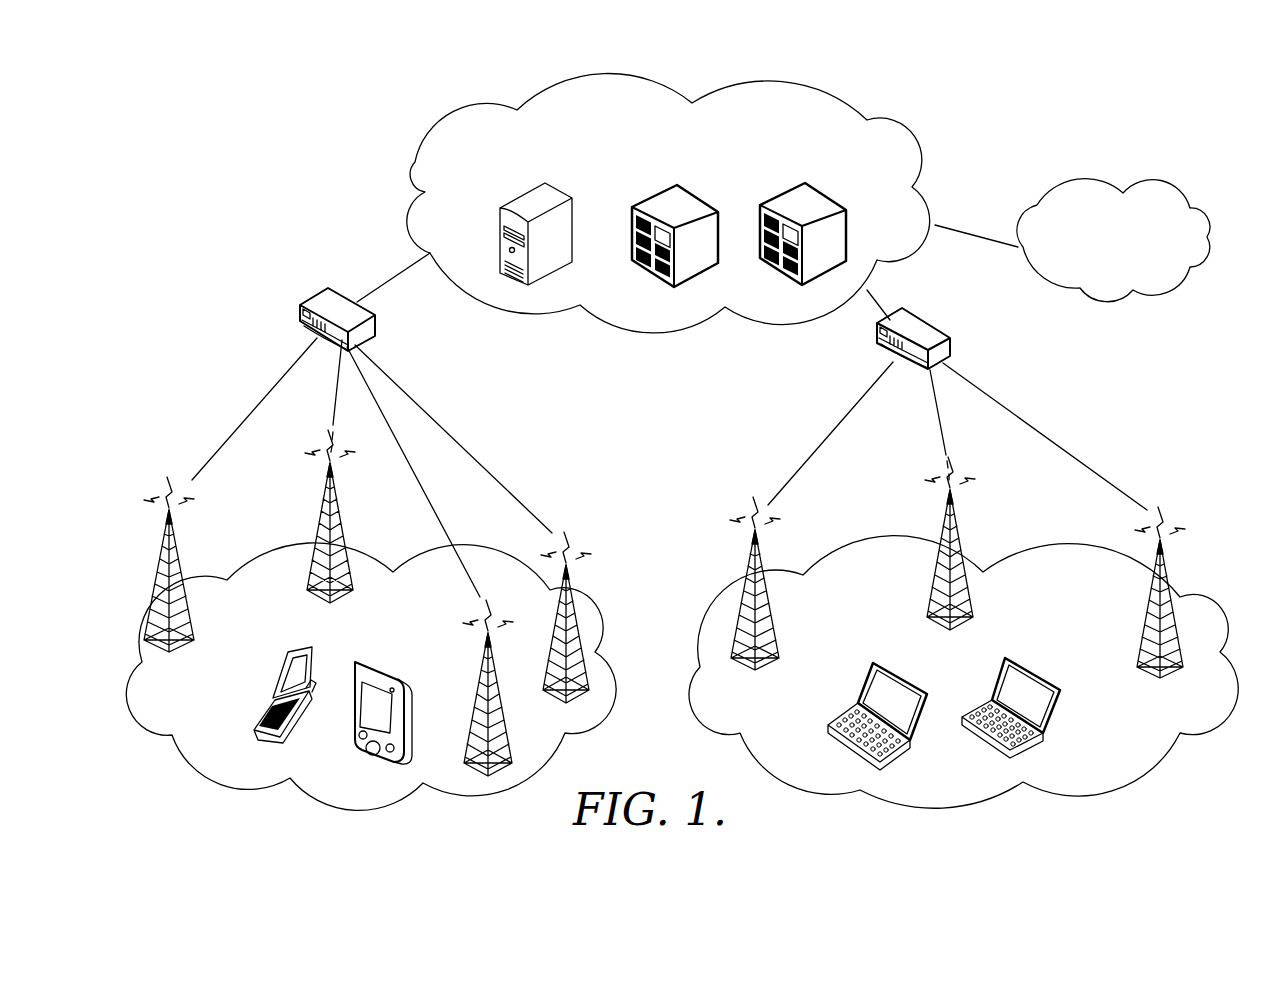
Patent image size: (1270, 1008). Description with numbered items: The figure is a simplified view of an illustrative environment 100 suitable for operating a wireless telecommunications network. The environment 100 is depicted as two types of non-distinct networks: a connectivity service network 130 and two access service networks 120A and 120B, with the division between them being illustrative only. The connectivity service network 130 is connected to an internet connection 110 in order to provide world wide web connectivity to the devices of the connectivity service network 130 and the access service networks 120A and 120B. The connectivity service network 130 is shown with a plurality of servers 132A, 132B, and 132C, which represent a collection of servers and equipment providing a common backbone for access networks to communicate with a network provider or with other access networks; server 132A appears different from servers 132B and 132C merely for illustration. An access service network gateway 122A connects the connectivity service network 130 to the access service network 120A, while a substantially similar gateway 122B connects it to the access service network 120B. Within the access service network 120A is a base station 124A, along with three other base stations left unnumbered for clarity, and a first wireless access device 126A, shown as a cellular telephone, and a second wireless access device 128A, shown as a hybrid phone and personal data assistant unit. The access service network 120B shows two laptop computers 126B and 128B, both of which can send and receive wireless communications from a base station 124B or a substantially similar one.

The environment 100 is at (156, 200).
The internet connection 110 is at (1153, 188).
The access service network 120A is at (358, 812).
The access service network 120B is at (988, 804).
The access service network gateway 122A is at (313, 295).
The access service network gateway 122B is at (934, 323).
The base station 124A is at (181, 648).
The base station 124B is at (768, 662).
The first wireless access device 126A is at (305, 647).
The laptop computer 126B is at (899, 681).
The second wireless access device 128A is at (400, 668).
The laptop computer 128B is at (1040, 671).
The connectivity service network 130 is at (414, 162).
The server 132A is at (512, 203).
The server 132B is at (647, 203).
The server 132C is at (774, 203).